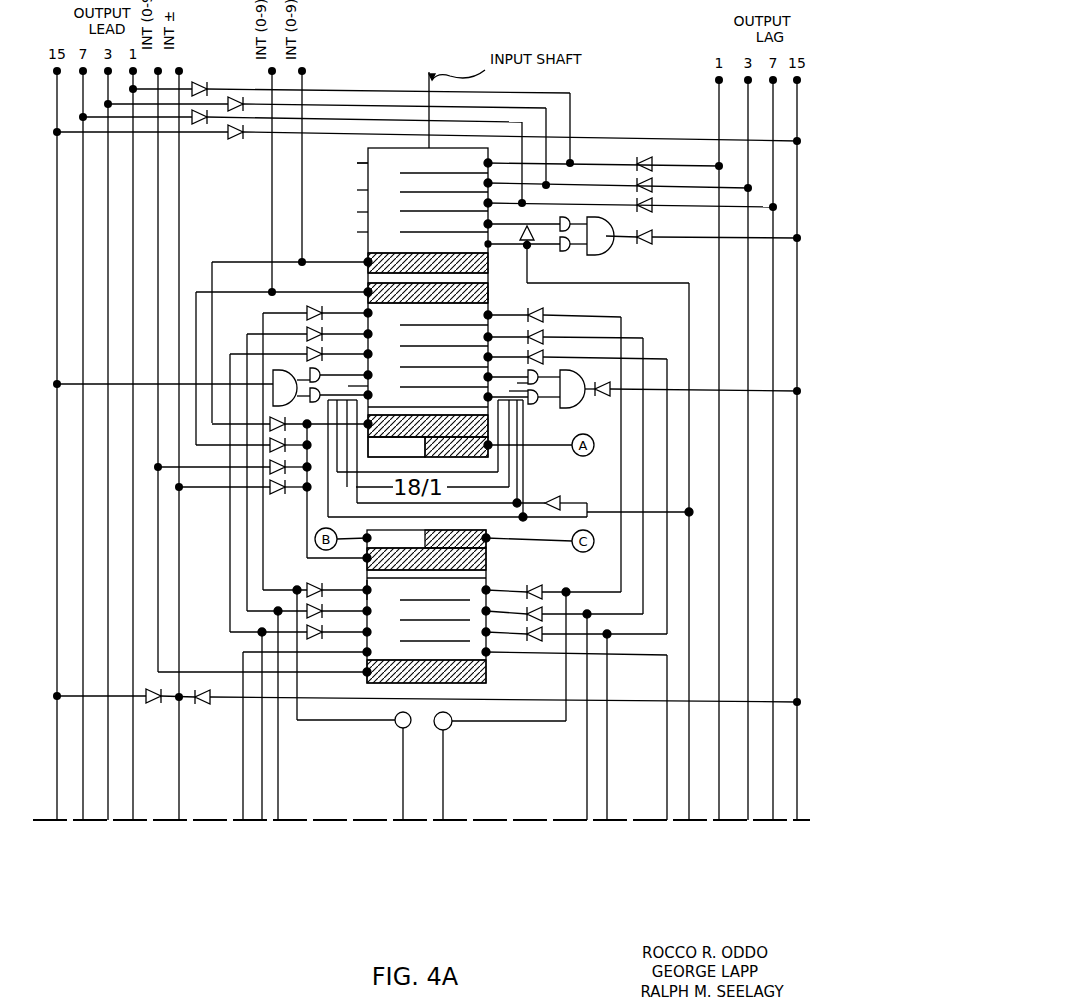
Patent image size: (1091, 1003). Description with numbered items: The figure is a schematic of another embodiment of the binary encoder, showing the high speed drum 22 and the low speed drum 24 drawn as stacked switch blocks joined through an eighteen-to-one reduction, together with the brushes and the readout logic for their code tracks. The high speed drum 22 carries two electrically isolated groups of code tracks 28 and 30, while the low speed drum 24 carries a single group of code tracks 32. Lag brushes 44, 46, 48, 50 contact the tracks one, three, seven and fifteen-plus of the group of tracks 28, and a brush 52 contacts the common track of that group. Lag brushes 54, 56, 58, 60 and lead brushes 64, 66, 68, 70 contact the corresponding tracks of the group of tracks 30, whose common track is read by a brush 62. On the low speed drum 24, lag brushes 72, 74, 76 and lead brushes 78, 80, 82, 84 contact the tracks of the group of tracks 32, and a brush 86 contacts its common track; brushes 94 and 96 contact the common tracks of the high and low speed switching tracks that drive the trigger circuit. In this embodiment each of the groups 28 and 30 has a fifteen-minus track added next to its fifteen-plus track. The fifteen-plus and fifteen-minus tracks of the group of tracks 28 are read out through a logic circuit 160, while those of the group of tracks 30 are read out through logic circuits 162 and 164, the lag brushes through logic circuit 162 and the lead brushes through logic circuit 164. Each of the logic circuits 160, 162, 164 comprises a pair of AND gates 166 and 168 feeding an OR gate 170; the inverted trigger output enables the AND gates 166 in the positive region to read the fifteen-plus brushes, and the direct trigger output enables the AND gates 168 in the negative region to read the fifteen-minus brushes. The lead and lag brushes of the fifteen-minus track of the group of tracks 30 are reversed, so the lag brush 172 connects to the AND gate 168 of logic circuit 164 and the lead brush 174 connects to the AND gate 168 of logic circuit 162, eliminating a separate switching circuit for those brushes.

The high speed drum 22 is at (368, 150).
The group of code tracks 28 is at (360, 163).
The group of code tracks 30 is at (488, 300).
The low speed drum 24 is at (486, 548).
The group of code tracks 32 is at (383, 592).
The lag brush 44 is at (500, 154).
The lag brush 46 is at (500, 174).
The lag brush 48 is at (500, 194).
The lag brush 50 is at (500, 214).
The brush 52 is at (368, 262).
The brush 62 is at (366, 292).
The lag brush 54 is at (494, 315).
The lag brush 56 is at (494, 336).
The lag brush 58 is at (494, 356).
The lag brush 60 is at (494, 376).
The lead brush 64 is at (364, 315).
The lead brush 66 is at (364, 336).
The lead brush 68 is at (364, 356).
The lead brush 70 is at (364, 377).
The lag brush 72 is at (494, 611).
The lag brush 74 is at (494, 632).
The lag brush 76 is at (494, 653).
The lead brush 78 is at (352, 587).
The lead brush 80 is at (352, 608).
The lead brush 82 is at (352, 629).
The lead brush 84 is at (352, 649).
The brush 86 is at (352, 669).
The brush 94 is at (366, 452).
The brush 96 is at (358, 558).
The logic circuit 160 is at (507, 504).
The logic circuit 162 is at (562, 378).
The logic circuit 164 is at (304, 368).
The AND gate 166 is at (562, 218).
The AND gate 168 is at (565, 255).
The OR gate 170 is at (610, 255).
The lag brush 172 is at (506, 390).
The lead brush 174 is at (346, 389).